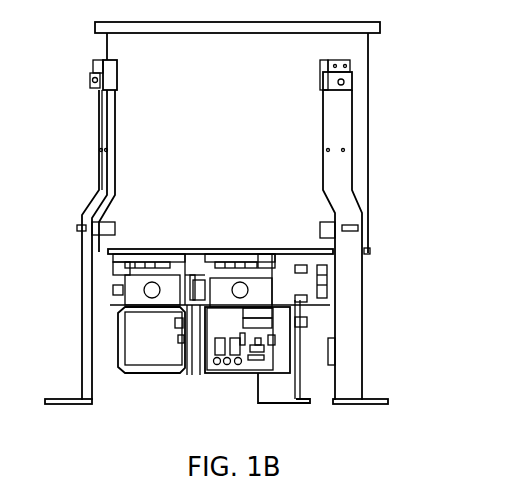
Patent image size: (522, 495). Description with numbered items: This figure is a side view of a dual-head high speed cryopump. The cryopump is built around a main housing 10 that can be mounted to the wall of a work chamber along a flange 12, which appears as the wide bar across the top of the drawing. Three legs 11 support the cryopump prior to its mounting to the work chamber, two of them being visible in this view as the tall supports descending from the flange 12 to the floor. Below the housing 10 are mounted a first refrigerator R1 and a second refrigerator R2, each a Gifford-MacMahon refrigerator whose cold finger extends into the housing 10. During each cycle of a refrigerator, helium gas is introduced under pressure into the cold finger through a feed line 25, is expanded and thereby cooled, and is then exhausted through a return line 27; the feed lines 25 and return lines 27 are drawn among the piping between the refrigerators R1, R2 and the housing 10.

The main housing 10 is at (370, 127).
The legs 11 is at (366, 368).
The flange 12 is at (380, 28).
The feed line 25 is at (115, 272).
The return line 27 is at (150, 297).
The first refrigerator R1 is at (233, 375).
The second refrigerator R2 is at (160, 375).